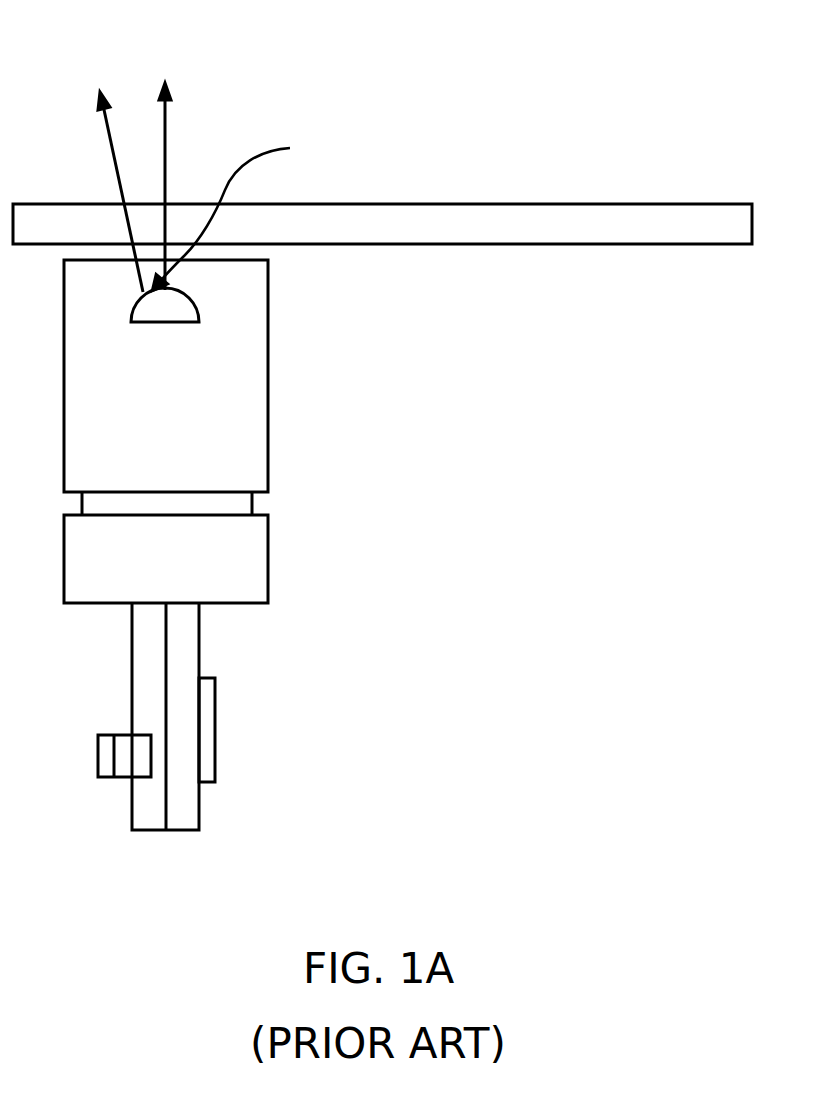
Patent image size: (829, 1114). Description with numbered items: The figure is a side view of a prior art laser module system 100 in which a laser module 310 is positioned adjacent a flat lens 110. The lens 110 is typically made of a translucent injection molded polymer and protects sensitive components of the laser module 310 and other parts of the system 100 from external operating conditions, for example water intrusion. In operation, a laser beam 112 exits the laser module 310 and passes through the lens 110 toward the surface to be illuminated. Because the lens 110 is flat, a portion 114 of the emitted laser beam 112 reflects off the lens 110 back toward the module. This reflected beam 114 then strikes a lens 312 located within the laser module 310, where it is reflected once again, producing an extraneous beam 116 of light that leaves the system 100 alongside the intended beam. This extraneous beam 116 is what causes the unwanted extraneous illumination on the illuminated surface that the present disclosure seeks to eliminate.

The laser module system 100 is at (397, 427).
The lens 110 is at (412, 218).
The laser beam 112 is at (168, 163).
The reflected beam 114 is at (242, 214).
The extraneous beam 116 is at (113, 138).
The laser module 310 is at (237, 385).
The lens 312 is at (186, 310).